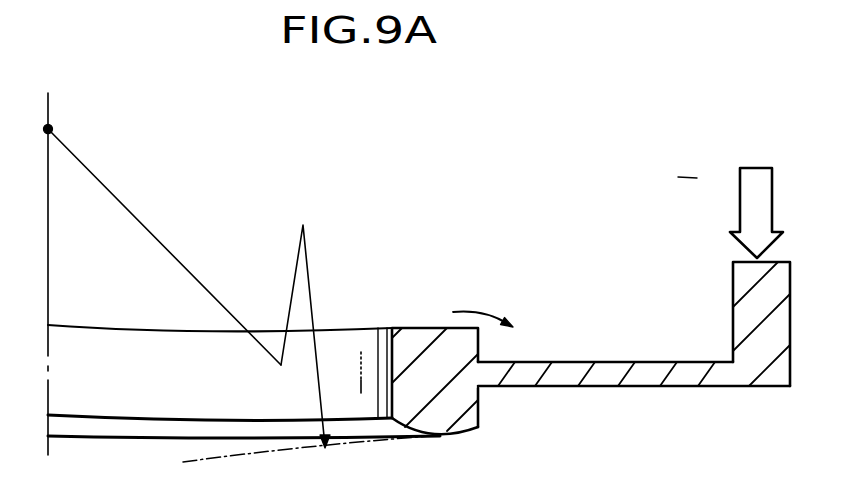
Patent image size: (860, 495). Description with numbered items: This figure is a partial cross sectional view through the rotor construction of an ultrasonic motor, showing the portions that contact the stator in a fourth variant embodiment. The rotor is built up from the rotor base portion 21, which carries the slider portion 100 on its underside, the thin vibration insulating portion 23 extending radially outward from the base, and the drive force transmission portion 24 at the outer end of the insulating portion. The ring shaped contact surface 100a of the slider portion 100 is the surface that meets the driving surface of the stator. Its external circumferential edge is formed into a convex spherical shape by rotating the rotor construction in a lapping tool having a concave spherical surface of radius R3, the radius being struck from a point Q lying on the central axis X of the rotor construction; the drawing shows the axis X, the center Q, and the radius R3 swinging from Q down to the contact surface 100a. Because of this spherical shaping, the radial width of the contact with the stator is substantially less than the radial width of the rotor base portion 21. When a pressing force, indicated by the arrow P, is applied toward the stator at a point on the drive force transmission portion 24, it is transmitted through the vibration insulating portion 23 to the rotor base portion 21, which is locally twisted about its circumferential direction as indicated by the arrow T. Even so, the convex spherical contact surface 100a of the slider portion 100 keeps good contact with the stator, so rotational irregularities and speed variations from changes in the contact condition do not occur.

The rotor base portion 21 is at (430, 327).
The vibration insulating portion 23 is at (647, 372).
The drive force transmission portion 24 is at (748, 275).
The slider portion 100 is at (473, 423).
The ring shaped contact surface 100a is at (453, 435).
The pressing force arrow P is at (730, 190).
The twisting arrow T is at (496, 332).
The center point Q is at (148, 236).
The central axis X is at (48, 103).
The radius R3 is at (318, 336).